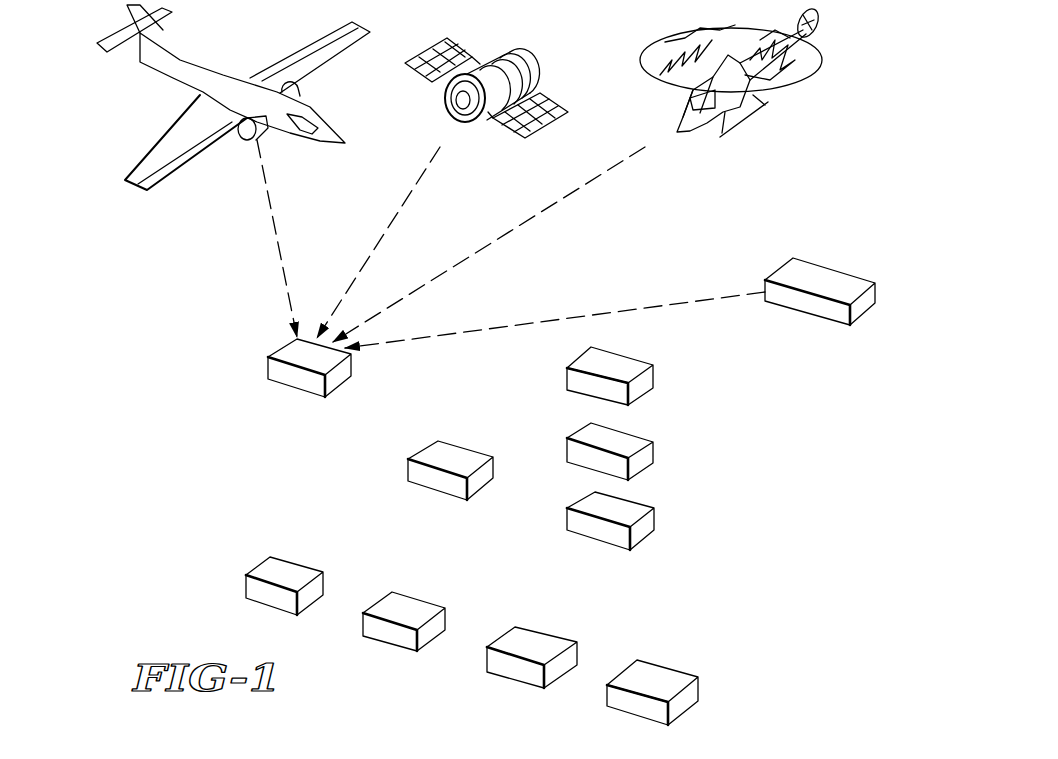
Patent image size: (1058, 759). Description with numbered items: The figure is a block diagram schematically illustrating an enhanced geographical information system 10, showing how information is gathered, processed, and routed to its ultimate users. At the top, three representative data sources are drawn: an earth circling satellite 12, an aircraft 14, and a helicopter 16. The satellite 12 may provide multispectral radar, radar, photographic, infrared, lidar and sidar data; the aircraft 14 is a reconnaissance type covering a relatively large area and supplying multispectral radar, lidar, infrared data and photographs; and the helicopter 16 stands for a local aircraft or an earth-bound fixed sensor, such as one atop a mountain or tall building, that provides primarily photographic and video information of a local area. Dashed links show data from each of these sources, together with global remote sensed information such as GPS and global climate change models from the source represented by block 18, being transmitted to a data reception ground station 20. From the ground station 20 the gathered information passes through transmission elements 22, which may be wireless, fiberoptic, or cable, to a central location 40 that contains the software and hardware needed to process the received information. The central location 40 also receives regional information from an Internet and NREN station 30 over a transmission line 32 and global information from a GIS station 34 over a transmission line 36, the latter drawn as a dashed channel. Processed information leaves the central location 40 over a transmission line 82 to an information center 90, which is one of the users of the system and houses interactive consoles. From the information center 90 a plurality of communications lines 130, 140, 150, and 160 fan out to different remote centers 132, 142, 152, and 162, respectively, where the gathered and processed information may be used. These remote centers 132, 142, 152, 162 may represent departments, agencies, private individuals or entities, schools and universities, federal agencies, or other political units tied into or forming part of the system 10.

The enhanced geographical information system 10 is at (886, 58).
The earth circling satellite 12 is at (530, 71).
The aircraft 14 is at (213, 97).
The helicopter 16 is at (790, 108).
The block 18 is at (853, 291).
The data reception ground station 20 is at (285, 350).
The transmission elements 22 is at (329, 433).
The Internet and NREN station 30 is at (652, 378).
The transmission line 32 is at (517, 394).
The GIS station 34 is at (652, 455).
The transmission line 36 is at (525, 426).
The central location 40 is at (445, 450).
The transmission line 82 is at (531, 479).
The information center 90 is at (654, 520).
The communications line 130 is at (656, 600).
The remote center 132 is at (675, 676).
The communications line 140 is at (582, 582).
The remote center 142 is at (523, 637).
The communications line 150 is at (511, 566).
The remote center 152 is at (403, 604).
The communications line 160 is at (441, 538).
The remote center 162 is at (270, 572).